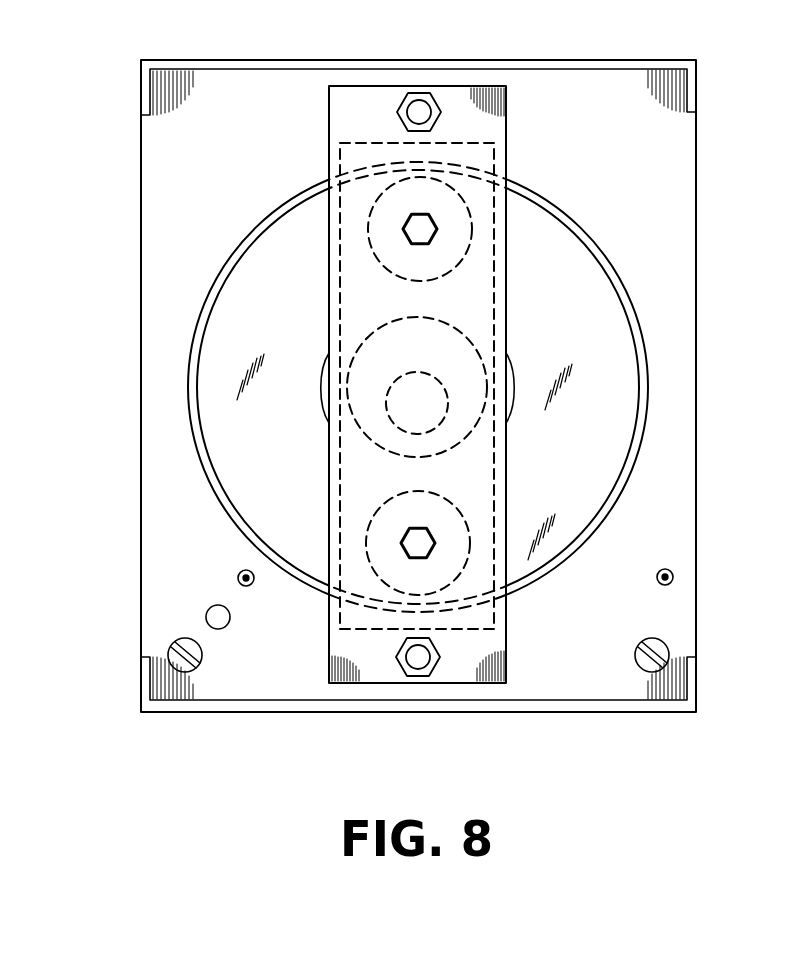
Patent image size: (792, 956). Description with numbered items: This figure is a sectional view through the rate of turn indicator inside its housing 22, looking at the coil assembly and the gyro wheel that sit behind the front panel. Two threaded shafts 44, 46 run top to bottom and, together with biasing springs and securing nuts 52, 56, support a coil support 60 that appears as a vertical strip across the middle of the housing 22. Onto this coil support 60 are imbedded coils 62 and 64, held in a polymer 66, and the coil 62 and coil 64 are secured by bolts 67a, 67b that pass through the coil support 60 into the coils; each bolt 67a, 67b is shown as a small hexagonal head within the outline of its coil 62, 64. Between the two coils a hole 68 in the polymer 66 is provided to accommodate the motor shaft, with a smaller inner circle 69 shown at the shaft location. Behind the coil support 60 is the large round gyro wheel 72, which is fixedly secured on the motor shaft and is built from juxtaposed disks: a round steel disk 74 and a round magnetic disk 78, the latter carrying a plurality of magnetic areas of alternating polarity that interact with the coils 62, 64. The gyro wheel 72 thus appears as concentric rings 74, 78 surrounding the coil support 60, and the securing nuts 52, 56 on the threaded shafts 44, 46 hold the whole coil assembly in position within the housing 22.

The housing 22 is at (635, 62).
The threaded shaft 44 is at (412, 100).
The threaded shaft 46 is at (420, 657).
The securing nut 52 is at (437, 102).
The securing nut 56 is at (402, 666).
The coil support 60 is at (493, 460).
The coil 62 is at (462, 257).
The coil 64 is at (367, 545).
The polymer 66 is at (337, 252).
The bolt 67a is at (420, 229).
The bolt 67b is at (418, 543).
The hole 68 is at (477, 353).
The central hub 69 is at (392, 423).
The gyro wheel 72 is at (667, 381).
The round steel disk 74 is at (642, 330).
The round magnetic disk 78 is at (620, 373).